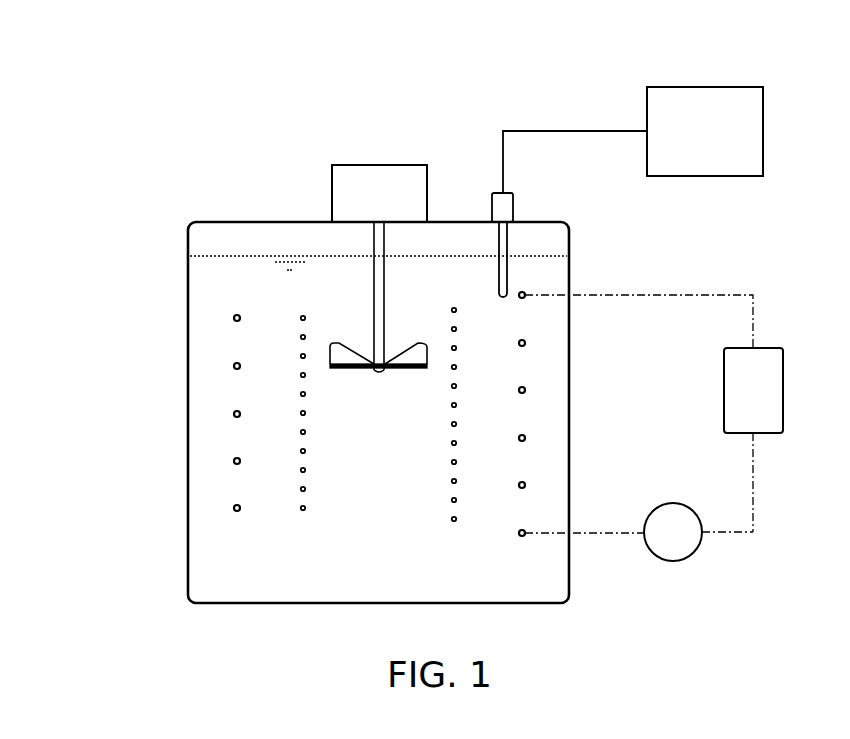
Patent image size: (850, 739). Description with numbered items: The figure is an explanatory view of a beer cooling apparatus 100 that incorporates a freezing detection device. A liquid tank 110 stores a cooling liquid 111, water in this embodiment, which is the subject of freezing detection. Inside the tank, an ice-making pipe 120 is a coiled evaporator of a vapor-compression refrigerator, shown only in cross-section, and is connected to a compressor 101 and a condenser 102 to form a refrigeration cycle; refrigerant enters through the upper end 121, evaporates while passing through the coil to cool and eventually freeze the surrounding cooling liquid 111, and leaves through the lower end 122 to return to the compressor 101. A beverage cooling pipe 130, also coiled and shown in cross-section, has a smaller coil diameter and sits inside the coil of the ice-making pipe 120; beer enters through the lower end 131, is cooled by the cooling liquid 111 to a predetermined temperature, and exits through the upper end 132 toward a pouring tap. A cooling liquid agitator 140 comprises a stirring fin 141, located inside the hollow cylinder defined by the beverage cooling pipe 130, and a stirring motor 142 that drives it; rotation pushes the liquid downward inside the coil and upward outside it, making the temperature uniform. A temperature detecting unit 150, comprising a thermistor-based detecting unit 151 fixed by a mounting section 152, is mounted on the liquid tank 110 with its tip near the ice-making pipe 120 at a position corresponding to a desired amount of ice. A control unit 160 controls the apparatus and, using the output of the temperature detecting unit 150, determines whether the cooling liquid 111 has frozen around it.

The beer cooling apparatus 100 is at (126, 111).
The liquid tank 110 is at (187, 420).
The cooling liquid 111 is at (212, 287).
The ice-making pipe 120 is at (561, 416).
The end of the ice-making pipe 121 is at (525, 293).
The end of the ice-making pipe 122 is at (521, 536).
The beverage cooling pipe 130 is at (301, 511).
The end of the beverage cooling pipe 131 is at (457, 443).
The end of the beverage cooling pipe 132 is at (509, 330).
The cooling liquid agitator 140 is at (388, 324).
The stirring fin 141 is at (406, 361).
The stirring motor 142 is at (367, 174).
The temperature detecting unit 150 is at (527, 216).
The detecting unit 151 is at (500, 257).
The mounting section 152 is at (505, 208).
The control unit 160 is at (697, 164).
The compressor 101 is at (683, 551).
The condenser 102 is at (773, 393).